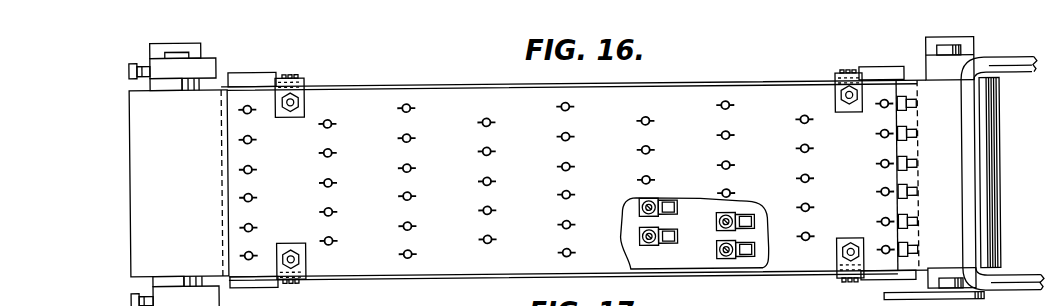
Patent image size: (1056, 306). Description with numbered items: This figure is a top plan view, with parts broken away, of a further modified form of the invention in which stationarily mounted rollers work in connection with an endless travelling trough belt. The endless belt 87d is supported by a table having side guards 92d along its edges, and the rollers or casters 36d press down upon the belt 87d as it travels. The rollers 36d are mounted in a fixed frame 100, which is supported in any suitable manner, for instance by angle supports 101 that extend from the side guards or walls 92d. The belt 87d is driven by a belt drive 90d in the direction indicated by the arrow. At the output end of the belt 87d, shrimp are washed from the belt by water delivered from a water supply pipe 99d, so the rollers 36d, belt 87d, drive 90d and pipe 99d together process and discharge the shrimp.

The endless belt 87d is at (190, 233).
The side guards 92d is at (466, 83).
The fixed frame 100 is at (460, 258).
The angle supports 101 is at (293, 267).
The rollers 36d is at (748, 238).
The belt drive 90d is at (884, 302).
The water supply pipe 99d is at (1018, 74).